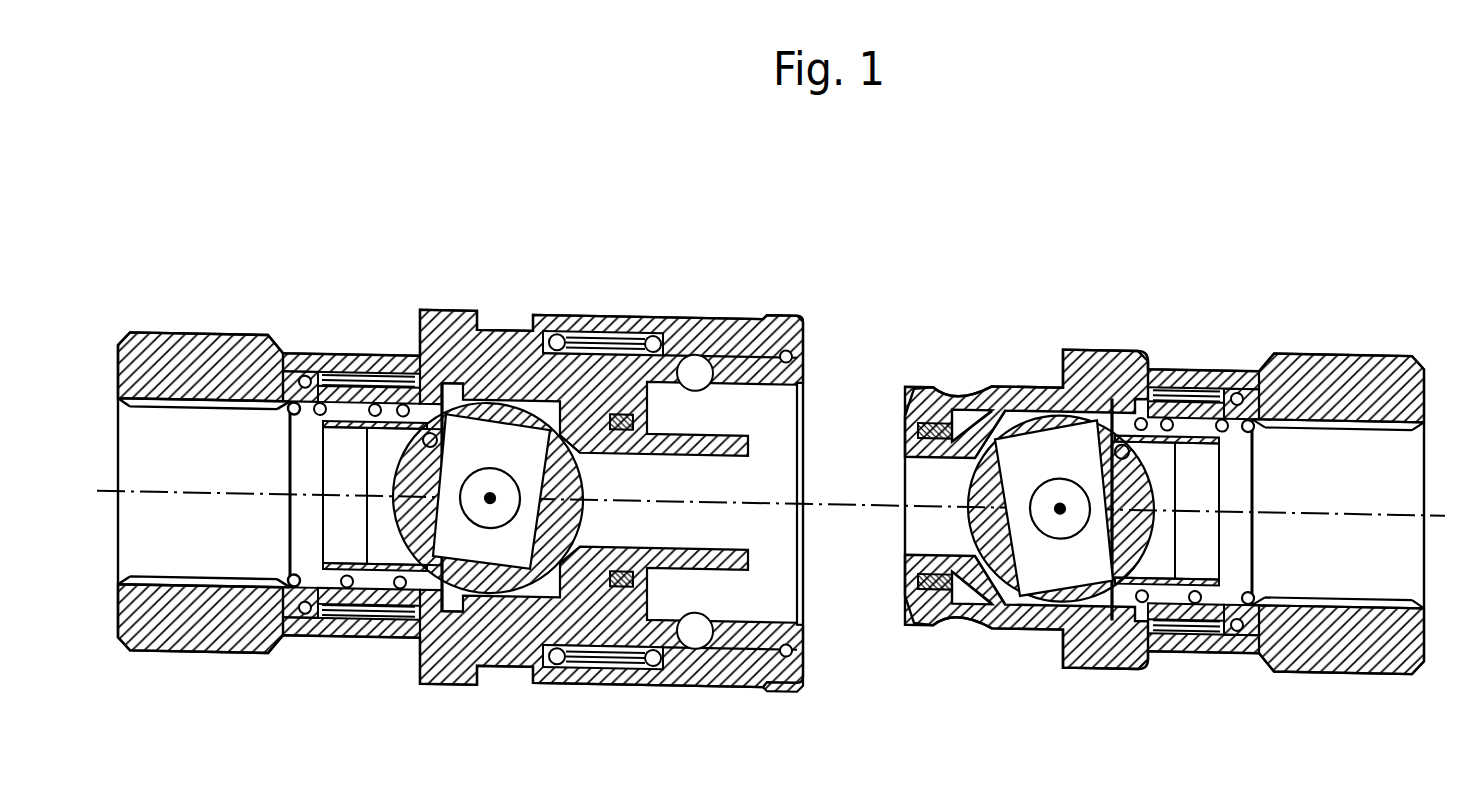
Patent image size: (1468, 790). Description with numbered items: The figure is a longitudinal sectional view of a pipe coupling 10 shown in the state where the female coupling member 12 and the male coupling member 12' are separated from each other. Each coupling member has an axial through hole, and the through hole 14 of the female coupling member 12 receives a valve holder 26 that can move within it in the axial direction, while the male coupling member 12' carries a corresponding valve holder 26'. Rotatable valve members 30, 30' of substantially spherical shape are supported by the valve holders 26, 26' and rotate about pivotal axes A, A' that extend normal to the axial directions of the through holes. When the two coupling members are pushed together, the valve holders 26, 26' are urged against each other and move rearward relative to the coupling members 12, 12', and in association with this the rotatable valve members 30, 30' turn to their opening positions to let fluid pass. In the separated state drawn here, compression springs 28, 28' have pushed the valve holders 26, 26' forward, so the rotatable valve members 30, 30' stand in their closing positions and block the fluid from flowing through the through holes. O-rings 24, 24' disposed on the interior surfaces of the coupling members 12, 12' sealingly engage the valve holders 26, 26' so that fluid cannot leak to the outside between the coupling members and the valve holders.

The pipe coupling 10 is at (990, 238).
The female coupling member 12 is at (460, 408).
The male coupling member 12' is at (1333, 378).
The through hole 14 is at (511, 397).
The O-ring 24 is at (667, 433).
The O-ring 24' is at (911, 434).
The valve holder 26 is at (592, 396).
The valve holder 26' is at (974, 441).
The compression spring 28 is at (336, 450).
The compression spring 28' is at (1221, 452).
The rotatable valve member 30 is at (393, 437).
The rotatable valve member 30' is at (1165, 437).
The pivotal axis A is at (490, 414).
The pivotal axis A' is at (1065, 445).